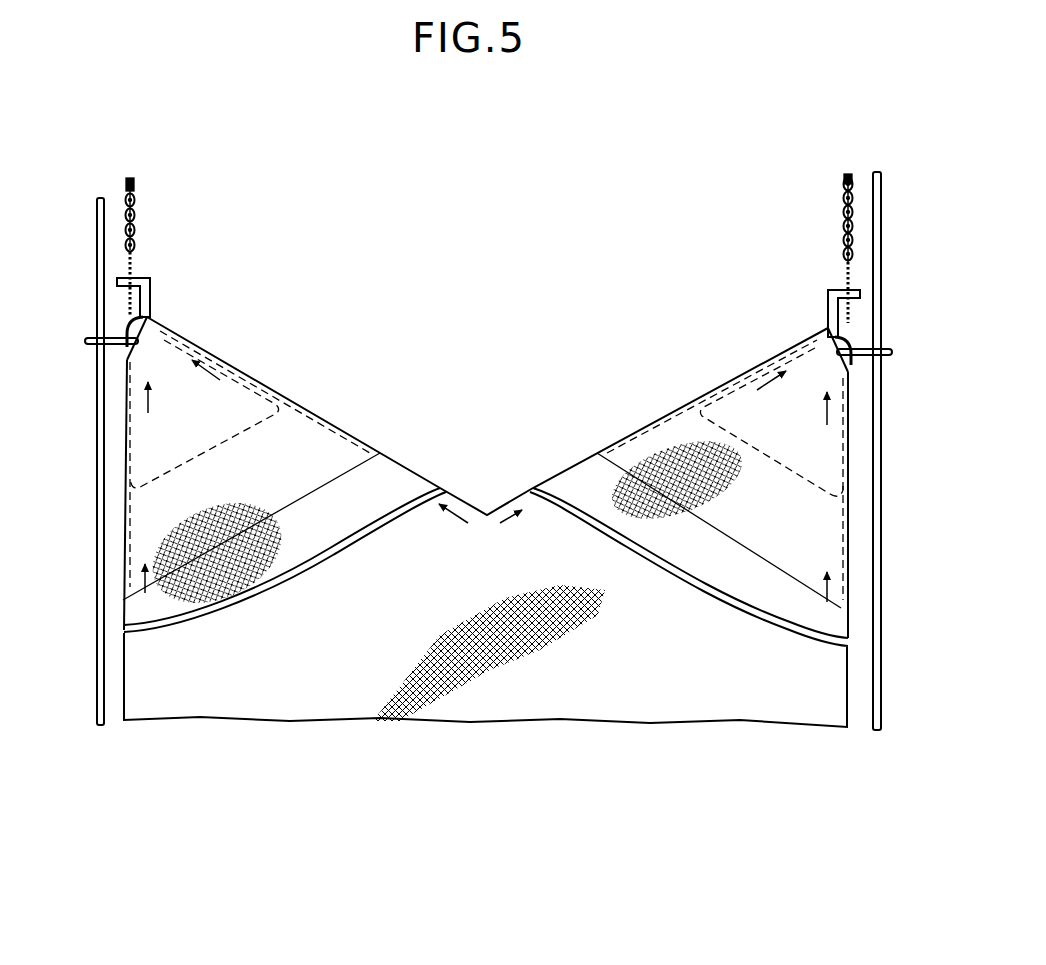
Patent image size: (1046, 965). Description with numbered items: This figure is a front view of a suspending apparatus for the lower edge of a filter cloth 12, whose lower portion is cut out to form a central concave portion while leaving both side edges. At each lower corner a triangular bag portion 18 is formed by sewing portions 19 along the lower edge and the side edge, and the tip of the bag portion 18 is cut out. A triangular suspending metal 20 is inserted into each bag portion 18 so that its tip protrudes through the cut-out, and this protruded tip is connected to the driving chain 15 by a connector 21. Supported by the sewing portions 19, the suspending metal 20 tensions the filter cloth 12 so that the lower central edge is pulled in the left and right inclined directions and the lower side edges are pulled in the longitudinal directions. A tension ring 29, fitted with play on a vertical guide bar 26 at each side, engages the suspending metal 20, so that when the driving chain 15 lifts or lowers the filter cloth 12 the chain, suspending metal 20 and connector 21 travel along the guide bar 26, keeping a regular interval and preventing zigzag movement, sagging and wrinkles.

The filter cloth 12 is at (483, 687).
The driving chain 15 is at (137, 206).
The bag portion 18 is at (300, 437).
The sewing portion 19 is at (122, 517).
The suspending metal 20 is at (158, 318).
The connector 21 is at (150, 286).
The guide bar 26 is at (90, 700).
The tension ring 29 is at (88, 338).